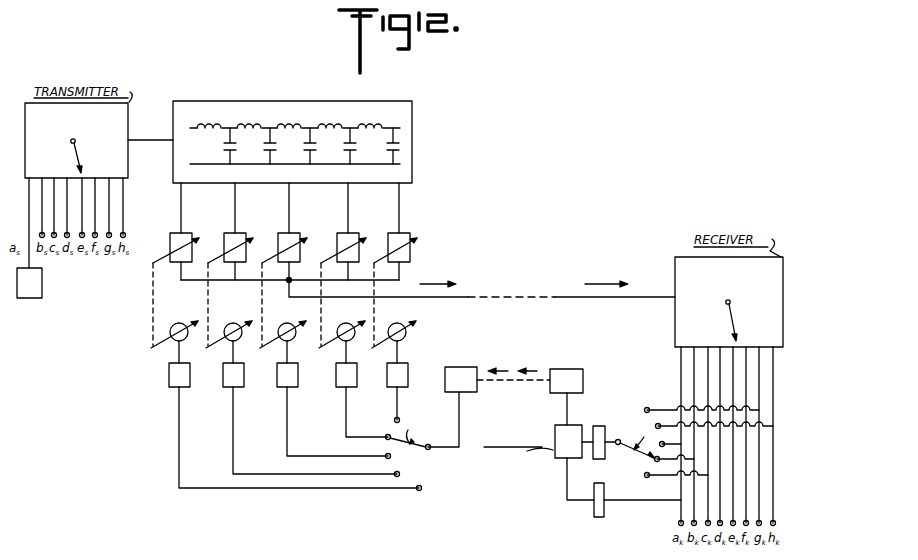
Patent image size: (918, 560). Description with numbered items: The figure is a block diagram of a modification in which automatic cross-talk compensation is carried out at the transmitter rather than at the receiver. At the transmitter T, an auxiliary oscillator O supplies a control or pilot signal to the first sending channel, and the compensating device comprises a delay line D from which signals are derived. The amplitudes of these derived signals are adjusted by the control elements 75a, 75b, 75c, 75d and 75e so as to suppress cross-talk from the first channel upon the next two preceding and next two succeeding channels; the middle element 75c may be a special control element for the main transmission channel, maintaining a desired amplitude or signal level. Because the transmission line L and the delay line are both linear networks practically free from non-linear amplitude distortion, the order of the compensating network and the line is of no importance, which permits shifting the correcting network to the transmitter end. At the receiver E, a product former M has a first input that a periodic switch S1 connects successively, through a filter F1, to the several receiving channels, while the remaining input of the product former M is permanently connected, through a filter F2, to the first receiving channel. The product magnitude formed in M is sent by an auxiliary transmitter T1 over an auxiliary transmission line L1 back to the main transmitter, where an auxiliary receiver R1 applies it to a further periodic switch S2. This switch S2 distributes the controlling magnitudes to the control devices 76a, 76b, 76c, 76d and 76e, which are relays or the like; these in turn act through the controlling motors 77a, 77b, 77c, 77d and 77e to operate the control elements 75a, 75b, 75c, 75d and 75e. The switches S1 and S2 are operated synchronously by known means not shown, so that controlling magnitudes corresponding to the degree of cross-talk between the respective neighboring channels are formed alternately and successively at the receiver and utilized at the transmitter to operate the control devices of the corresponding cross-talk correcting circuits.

The transmitter T is at (81, 150).
The auxiliary oscillator O is at (42, 290).
The delay line D is at (291, 101).
The control element 75a is at (177, 228).
The control element 75b is at (231, 228).
The control element 75c is at (285, 228).
The control element 75d is at (344, 228).
The control element 75e is at (395, 228).
The controlling motor 77a is at (181, 320).
The controlling motor 77b is at (235, 320).
The controlling motor 77c is at (289, 320).
The controlling motor 77d is at (348, 320).
The controlling motor 77e is at (399, 320).
The control device 76a is at (188, 382).
The control device 76b is at (242, 382).
The control device 76c is at (296, 382).
The control device 76d is at (355, 382).
The control device 76e is at (406, 382).
The transmission line L is at (511, 283).
The periodic switch S2 is at (405, 424).
The auxiliary receiver R1 is at (480, 369).
The auxiliary transmission line L1 is at (519, 386).
The auxiliary transmitter T1 is at (585, 369).
The product former M is at (577, 425).
The filter F1 is at (601, 426).
The filter F2 is at (598, 468).
The periodic switch S1 is at (641, 437).
The receiver E is at (733, 313).